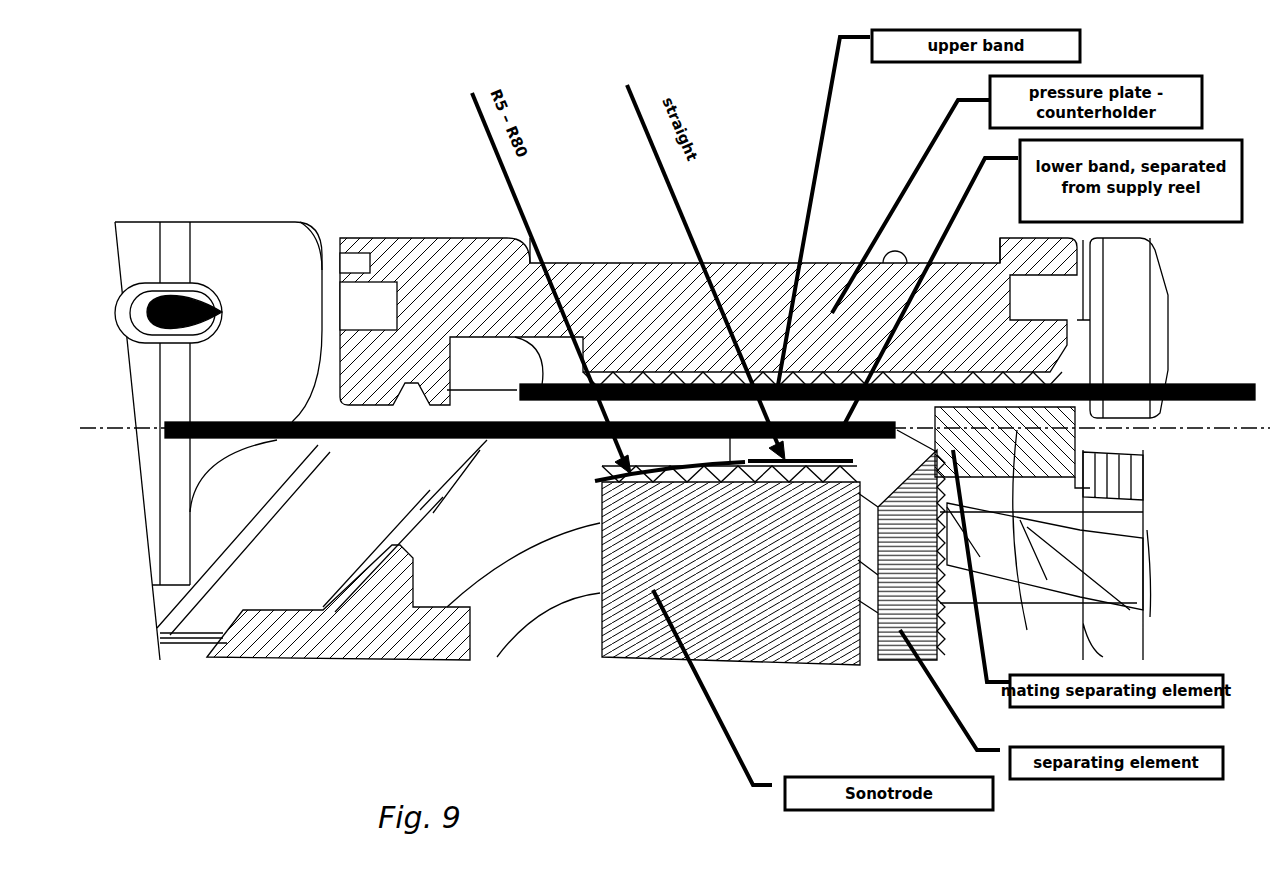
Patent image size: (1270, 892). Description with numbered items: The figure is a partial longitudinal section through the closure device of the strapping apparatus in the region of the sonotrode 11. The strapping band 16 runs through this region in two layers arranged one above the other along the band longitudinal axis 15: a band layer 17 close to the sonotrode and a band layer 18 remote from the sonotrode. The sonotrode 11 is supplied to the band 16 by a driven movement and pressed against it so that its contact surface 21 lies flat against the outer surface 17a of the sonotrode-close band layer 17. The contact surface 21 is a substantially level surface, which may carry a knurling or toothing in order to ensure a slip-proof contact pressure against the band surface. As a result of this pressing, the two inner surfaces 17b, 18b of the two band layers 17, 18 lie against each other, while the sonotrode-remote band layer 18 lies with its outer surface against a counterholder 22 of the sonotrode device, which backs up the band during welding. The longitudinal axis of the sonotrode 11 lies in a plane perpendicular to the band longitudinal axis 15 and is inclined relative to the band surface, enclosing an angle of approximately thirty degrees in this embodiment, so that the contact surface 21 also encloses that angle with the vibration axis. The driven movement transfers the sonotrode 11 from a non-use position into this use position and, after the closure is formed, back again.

The sonotrode 11 is at (637, 657).
The band longitudinal axis 15 is at (1043, 535).
The band 16 is at (962, 375).
The band layer 17 is at (497, 440).
The outer surface 17a is at (530, 447).
The inner surface 17b is at (222, 430).
The band layer 18 is at (500, 333).
The inner surface 18b is at (1178, 398).
The contact surface 21 is at (710, 478).
The counterholder 22 is at (650, 370).